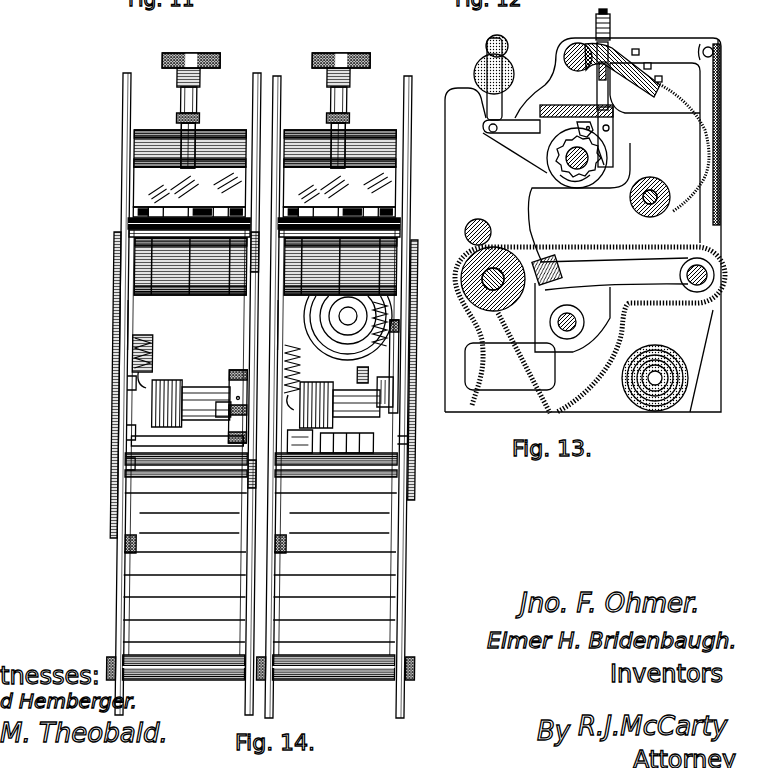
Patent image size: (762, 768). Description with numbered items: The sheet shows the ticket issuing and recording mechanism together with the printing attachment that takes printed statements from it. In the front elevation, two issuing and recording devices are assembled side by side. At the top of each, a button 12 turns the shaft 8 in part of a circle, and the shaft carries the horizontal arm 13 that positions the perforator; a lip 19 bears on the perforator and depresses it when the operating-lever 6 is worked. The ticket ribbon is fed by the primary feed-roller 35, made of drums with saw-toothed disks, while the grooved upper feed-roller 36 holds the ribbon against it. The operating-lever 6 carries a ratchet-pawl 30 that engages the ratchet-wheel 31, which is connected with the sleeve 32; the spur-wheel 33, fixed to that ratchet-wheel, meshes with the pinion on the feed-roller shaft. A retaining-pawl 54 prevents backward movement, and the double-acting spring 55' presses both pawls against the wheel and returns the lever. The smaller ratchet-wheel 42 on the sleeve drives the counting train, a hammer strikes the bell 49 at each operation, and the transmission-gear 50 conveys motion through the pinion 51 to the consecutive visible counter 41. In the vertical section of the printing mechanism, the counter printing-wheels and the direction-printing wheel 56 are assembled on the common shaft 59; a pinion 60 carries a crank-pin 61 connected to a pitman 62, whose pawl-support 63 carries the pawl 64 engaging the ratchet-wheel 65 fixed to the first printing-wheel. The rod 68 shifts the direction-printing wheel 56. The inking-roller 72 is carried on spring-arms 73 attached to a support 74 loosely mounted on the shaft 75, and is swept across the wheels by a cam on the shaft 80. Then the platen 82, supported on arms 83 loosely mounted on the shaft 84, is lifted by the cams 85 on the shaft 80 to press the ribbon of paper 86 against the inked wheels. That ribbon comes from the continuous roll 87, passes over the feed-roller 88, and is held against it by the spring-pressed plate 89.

In FIG. 14, the button 12 is at (221, 62).
In FIG. 14, the lip 19 is at (156, 130).
In FIG. 14, the shaft 8 is at (204, 130).
In FIG. 13, the shaft 8 is at (614, 272).
In FIG. 14, the upper feed-roller 36 is at (205, 208).
In FIG. 14, the retaining-pawl 54 is at (118, 270).
In FIG. 14, the operating-lever 6 is at (131, 331).
In FIG. 14, the primary feed-roller 35 is at (207, 296).
In FIG. 14, the double-acting spring 55' is at (160, 361).
In FIG. 14, the sleeve 32 is at (208, 387).
In FIG. 14, the horizontal arm 13 is at (250, 370).
In FIG. 14, the ratchet-pawl 30 is at (131, 381).
In FIG. 14, the ratchet-wheel 31 is at (132, 431).
In FIG. 14, the spur-wheel 33 is at (121, 464).
In FIG. 14, the smaller ratchet-wheel 42 is at (241, 422).
In FIG. 14, the transmission-gear 50 is at (272, 511).
In FIG. 14, the bell 49 is at (347, 328).
In FIG. 14, the consecutive visible counter 41 is at (368, 458).
In FIG. 14, the pinion 51 is at (415, 440).
In FIG. 13, the crank-pin 61 is at (486, 46).
In FIG. 13, the pinion 60 is at (514, 68).
In FIG. 13, the pitman 62 is at (497, 108).
In FIG. 13, the pawl-support 63 is at (512, 135).
In FIG. 13, the pawl 64 is at (585, 124).
In FIG. 13, the rod 68 is at (588, 104).
In FIG. 13, the support 74 is at (597, 43).
In FIG. 13, the shaft 75 is at (565, 50).
In FIG. 13, the spring-arms 73 is at (677, 103).
In FIG. 13, the inking-roller 72 is at (655, 216).
In FIG. 13, the shaft 59 is at (610, 162).
In FIG. 13, the ratchet-wheel 65 is at (565, 170).
In FIG. 13, the direction-printing wheel 56 is at (587, 180).
In FIG. 13, the spring-pressed plate 89 is at (460, 257).
In FIG. 13, the ribbon of paper 86 is at (583, 243).
In FIG. 13, the platen 82 is at (545, 262).
In FIG. 13, the shaft 84 is at (688, 278).
In FIG. 13, the arms 83 is at (572, 314).
In FIG. 13, the feed-roller 88 is at (519, 297).
In FIG. 13, the cams 85 is at (598, 326).
In FIG. 13, the shaft 80 is at (570, 333).
In FIG. 13, the continuous roll 87 is at (680, 344).